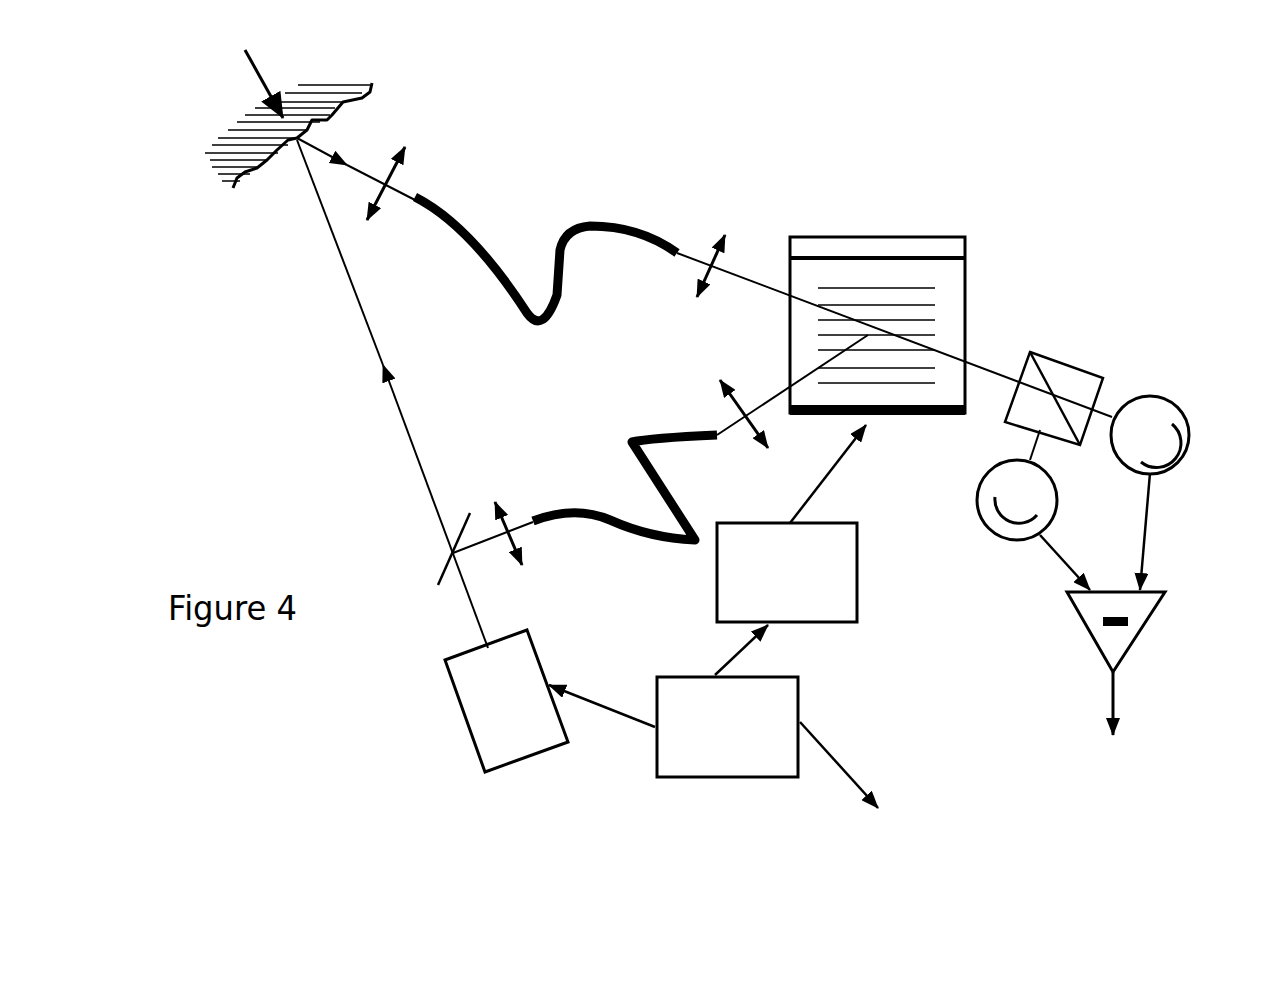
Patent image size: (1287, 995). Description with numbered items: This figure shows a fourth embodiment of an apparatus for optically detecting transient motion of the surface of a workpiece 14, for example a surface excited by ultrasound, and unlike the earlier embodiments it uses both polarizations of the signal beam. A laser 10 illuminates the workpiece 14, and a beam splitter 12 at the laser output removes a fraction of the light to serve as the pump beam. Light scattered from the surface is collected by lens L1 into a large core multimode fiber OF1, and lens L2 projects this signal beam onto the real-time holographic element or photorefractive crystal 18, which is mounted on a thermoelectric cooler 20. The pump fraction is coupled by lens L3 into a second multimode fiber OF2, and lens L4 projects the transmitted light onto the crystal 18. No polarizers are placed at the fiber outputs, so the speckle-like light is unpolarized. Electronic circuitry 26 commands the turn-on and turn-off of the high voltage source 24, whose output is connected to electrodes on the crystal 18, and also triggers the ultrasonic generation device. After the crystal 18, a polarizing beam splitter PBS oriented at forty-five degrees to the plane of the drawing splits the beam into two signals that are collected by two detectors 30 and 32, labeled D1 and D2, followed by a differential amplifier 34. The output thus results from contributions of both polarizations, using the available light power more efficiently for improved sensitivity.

The laser 10 is at (460, 715).
The beam splitter 12 is at (450, 555).
The workpiece 14 is at (212, 147).
The photorefractive crystal 18 is at (955, 277).
The thermoelectric cooler 20 is at (870, 237).
The high voltage source 24 is at (857, 555).
The electronic circuitry 26 is at (732, 775).
The detector 30 is at (1010, 538).
The detector 32 is at (1190, 440).
The differential amplifier 34 is at (1100, 645).
The lens L1 is at (407, 167).
The lens L2 is at (682, 276).
The lens L3 is at (534, 548).
The lens L4 is at (716, 410).
The multimode fiber OF1 is at (546, 283).
The multimode fiber OF2 is at (625, 487).
The polarizing beam splitter PBS is at (1073, 358).
The detector D1 is at (1080, 526).
The detector D2 is at (1180, 509).